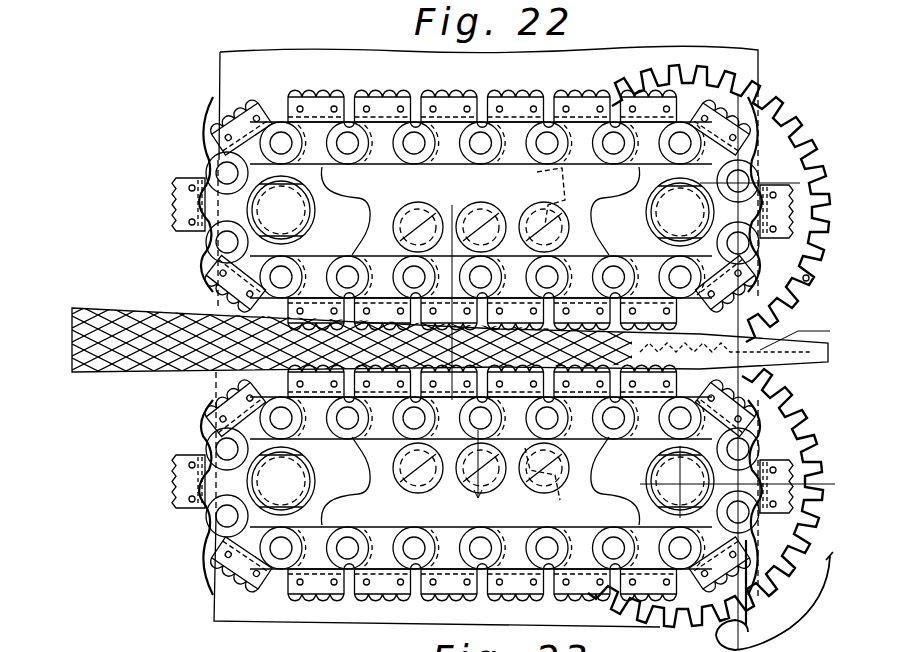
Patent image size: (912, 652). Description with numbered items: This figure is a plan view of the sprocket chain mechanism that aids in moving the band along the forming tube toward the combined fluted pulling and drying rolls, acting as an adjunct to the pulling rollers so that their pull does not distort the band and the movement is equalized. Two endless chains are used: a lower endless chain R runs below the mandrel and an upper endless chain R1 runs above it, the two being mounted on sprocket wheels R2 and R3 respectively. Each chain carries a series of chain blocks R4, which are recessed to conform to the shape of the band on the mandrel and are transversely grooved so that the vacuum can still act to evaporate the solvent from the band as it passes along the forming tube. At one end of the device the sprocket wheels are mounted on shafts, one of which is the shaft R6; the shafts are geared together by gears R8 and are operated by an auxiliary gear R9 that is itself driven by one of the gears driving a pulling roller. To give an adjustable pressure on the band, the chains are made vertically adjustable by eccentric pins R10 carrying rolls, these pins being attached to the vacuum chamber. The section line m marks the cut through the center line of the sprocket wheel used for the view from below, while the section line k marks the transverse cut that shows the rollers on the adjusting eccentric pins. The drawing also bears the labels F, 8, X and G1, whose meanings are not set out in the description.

The endless chain R1 is at (338, 85).
The sprocket wheel R3 is at (352, 218).
The eccentric pin R10 is at (447, 198).
The endless chain R is at (752, 186).
The cable F is at (138, 302).
The pivot pin 8 is at (809, 278).
The shaft R6 is at (782, 320).
The section line X is at (795, 331).
The gear R8 is at (776, 394).
The section line m is at (486, 630).
The sprocket wheel R2 is at (345, 488).
The section line k is at (467, 365).
The chain block R4 is at (313, 604).
The gear G1 is at (394, 622).
The auxiliary gear R9 is at (740, 628).